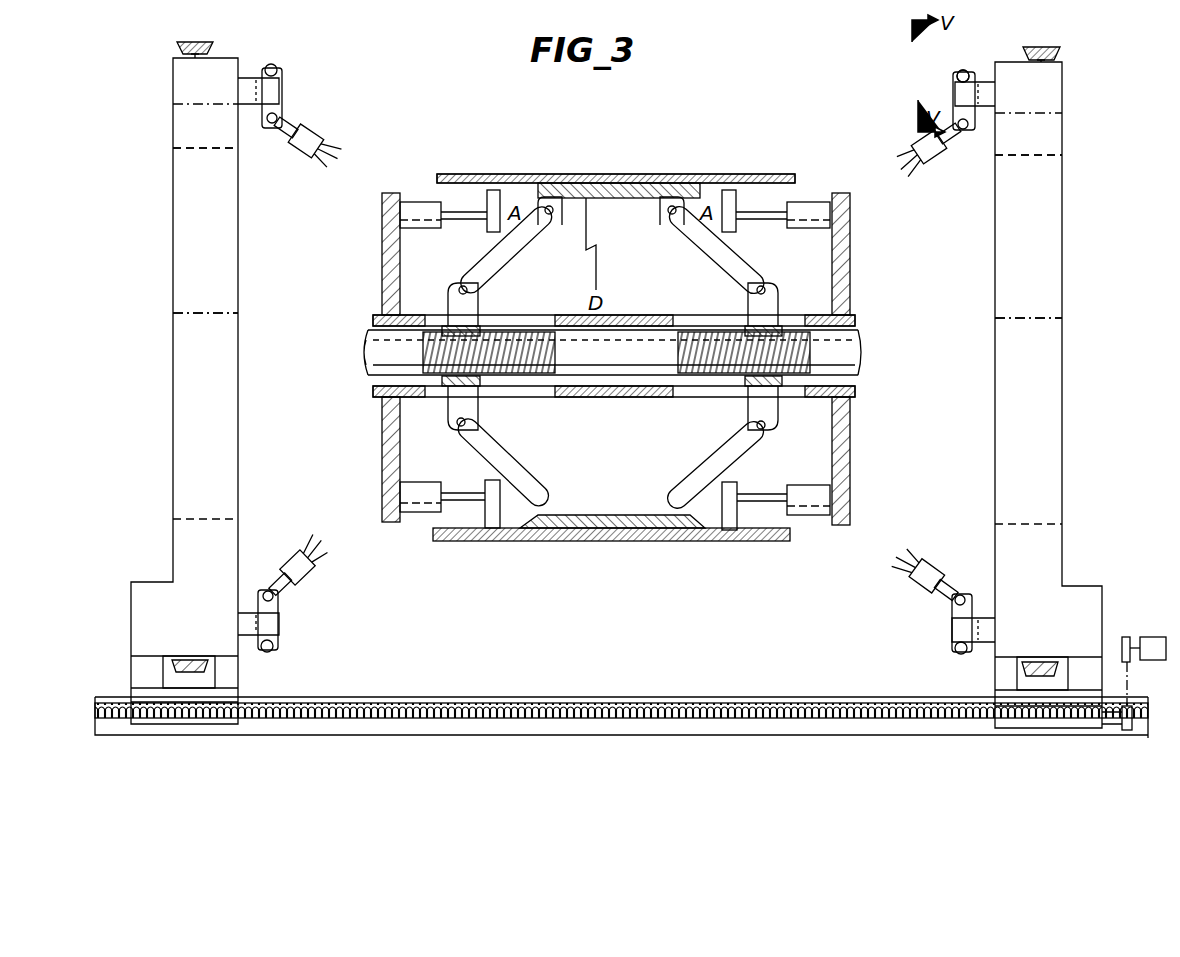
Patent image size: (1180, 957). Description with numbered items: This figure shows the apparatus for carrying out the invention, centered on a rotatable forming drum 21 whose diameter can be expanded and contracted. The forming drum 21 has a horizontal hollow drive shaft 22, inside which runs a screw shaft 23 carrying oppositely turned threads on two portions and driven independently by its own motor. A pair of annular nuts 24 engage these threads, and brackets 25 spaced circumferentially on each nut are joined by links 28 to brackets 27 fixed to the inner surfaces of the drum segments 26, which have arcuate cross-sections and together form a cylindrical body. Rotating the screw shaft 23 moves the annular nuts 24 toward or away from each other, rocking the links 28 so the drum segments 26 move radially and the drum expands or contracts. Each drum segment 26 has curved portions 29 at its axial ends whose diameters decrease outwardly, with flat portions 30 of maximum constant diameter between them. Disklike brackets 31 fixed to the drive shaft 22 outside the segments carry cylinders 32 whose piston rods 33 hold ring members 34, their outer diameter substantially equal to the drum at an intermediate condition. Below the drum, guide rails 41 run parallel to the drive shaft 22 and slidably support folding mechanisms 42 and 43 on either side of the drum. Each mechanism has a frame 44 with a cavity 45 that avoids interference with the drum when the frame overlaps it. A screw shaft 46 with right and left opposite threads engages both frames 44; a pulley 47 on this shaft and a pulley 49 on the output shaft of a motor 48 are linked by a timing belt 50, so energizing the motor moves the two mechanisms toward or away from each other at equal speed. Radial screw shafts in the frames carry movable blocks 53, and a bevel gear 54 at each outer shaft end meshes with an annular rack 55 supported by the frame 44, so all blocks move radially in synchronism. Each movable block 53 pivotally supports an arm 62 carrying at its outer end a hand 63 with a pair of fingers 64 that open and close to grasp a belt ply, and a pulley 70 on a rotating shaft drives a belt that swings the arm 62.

The forming drum 21 is at (639, 162).
The drive shaft 22 is at (642, 316).
The screw shaft 23 is at (858, 350).
The annular nuts 24 is at (478, 324).
The brackets 25 is at (448, 300).
The drum segments 26 is at (598, 204).
The brackets 27 is at (564, 222).
The link 28 is at (515, 250).
The curved portions 29 is at (525, 192).
The flat portions 30 is at (608, 183).
The disklike brackets 31 is at (382, 262).
The cylinders 32 is at (422, 228).
The piston rods 33 is at (614, 356).
The ring members 34 is at (437, 178).
The guide rails 41 is at (661, 698).
The folding mechanism 42 is at (1063, 440).
The folding mechanism 43 is at (240, 385).
The frame 44 is at (238, 318).
The cavity 45 is at (222, 150).
The screw shaft 46 is at (606, 705).
The pulley 47 is at (1134, 716).
The motor 48 is at (1153, 637).
The pulley 49 is at (1125, 637).
The timing belt 50 is at (1130, 686).
The movable blocks 53 is at (974, 84).
The bevel gear 54 is at (205, 54).
The annular rack 55 is at (188, 42).
The arm 62 is at (945, 138).
The hand 63 is at (310, 145).
The clamp fingers 64 is at (893, 166).
The pulley 70 is at (958, 72).